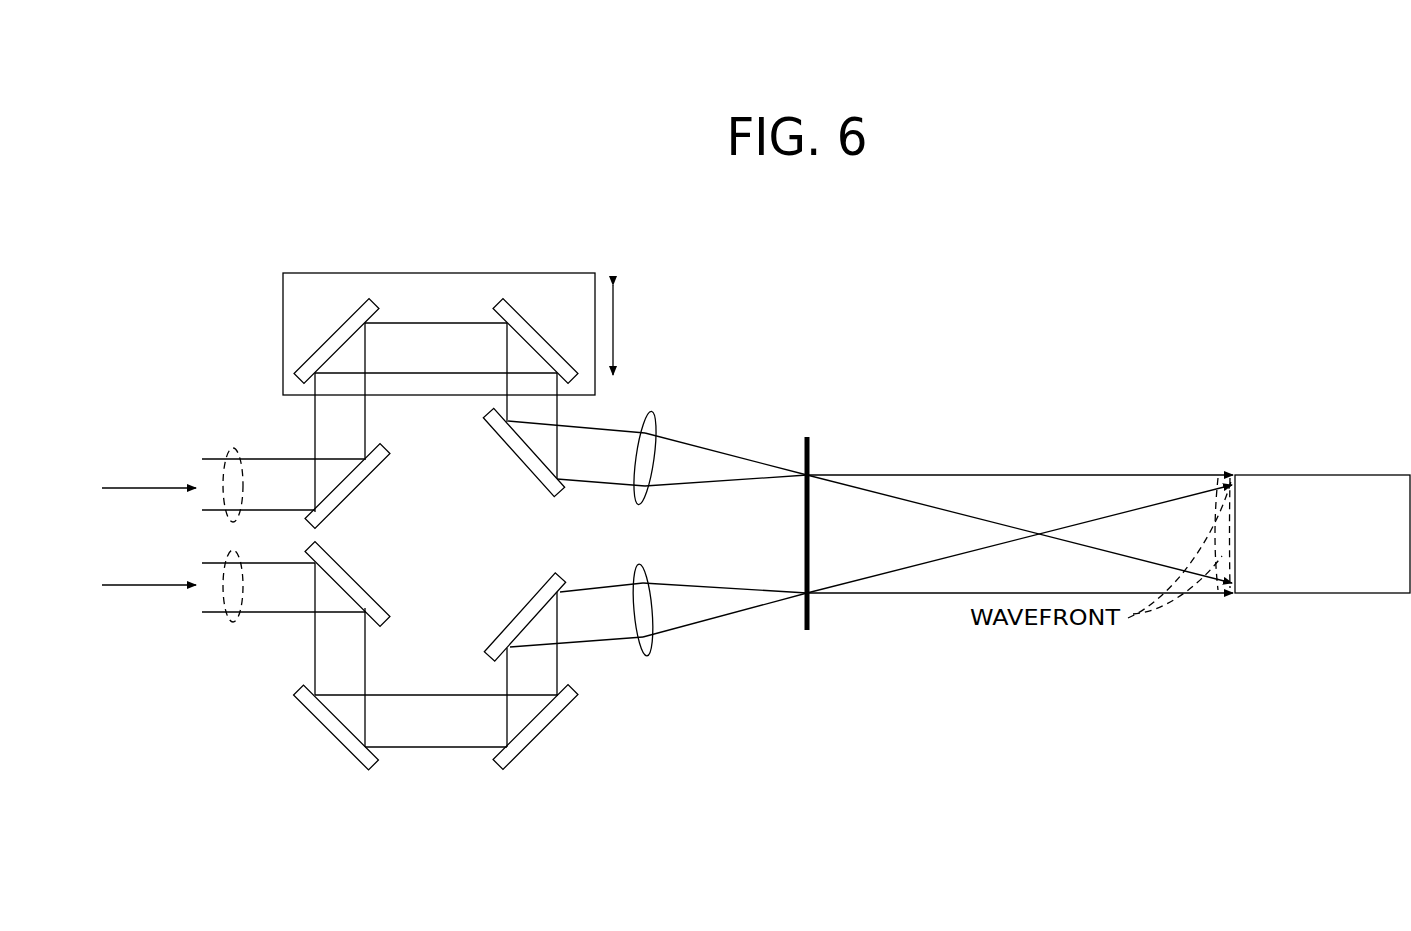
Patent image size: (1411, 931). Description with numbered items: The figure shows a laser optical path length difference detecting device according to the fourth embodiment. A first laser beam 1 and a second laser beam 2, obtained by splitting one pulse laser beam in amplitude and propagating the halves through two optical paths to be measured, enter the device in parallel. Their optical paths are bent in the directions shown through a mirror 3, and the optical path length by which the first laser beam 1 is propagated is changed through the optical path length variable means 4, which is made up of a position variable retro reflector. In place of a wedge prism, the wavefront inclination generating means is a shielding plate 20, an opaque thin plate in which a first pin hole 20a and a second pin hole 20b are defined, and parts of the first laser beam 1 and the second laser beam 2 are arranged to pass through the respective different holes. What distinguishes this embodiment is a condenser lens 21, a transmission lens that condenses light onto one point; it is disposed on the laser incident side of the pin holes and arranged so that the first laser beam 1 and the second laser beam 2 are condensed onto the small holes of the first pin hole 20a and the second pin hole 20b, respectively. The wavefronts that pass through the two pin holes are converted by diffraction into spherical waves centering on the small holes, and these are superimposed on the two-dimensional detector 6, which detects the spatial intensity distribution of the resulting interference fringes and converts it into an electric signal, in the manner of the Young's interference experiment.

The first laser beam 1 is at (233, 448).
The second laser beam 2 is at (233, 622).
The mirror 3 is at (313, 718).
The optical path length variable means 4 is at (561, 273).
The two-dimensional detector 6 is at (1393, 473).
The shielding plate 20 is at (808, 437).
The first pin hole 20a is at (810, 473).
The second pin hole 20b is at (810, 595).
The condenser lens 21 is at (648, 410).